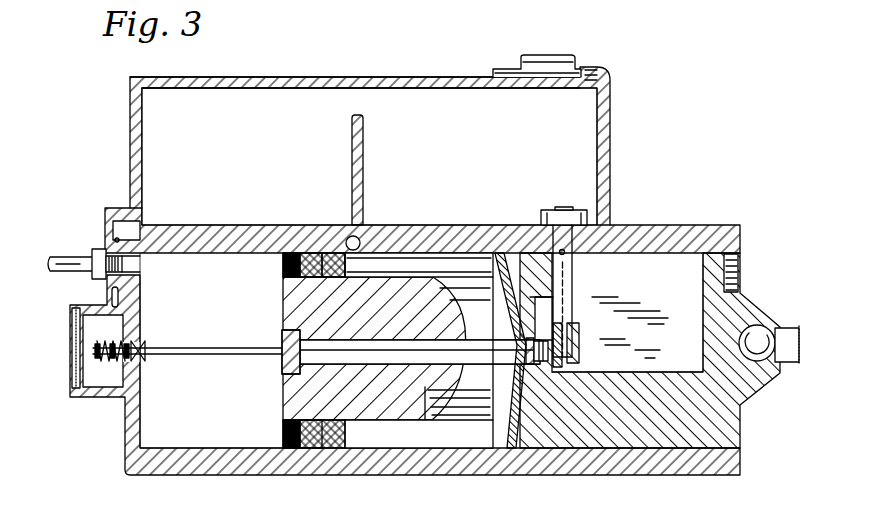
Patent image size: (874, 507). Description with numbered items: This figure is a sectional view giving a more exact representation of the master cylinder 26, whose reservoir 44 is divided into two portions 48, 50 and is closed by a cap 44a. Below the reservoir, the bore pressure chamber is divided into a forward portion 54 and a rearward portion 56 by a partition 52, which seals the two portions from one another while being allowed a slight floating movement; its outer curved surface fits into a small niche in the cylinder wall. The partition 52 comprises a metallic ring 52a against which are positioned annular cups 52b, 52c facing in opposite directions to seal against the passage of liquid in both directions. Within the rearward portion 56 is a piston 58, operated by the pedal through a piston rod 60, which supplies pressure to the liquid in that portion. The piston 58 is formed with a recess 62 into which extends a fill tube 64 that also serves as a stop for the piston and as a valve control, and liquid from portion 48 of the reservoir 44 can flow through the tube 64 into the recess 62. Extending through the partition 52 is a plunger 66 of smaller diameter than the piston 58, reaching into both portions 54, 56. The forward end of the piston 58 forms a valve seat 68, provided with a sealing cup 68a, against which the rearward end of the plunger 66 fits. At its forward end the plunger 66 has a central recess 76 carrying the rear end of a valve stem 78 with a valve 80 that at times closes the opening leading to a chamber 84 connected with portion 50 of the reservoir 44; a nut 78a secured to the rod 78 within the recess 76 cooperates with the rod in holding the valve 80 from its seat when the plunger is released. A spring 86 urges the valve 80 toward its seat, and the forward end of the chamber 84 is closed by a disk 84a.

The master cylinder 26 is at (118, 171).
The reservoir 44 is at (415, 100).
The cap 44a is at (553, 40).
The reservoir portion 48 is at (613, 170).
The reservoir portion 50 is at (163, 188).
The partition 52 is at (280, 276).
The metallic ring 52a is at (322, 250).
The annular cup 52b is at (290, 250).
The annular cup 52c is at (328, 250).
The forward portion 54 is at (150, 437).
The rearward portion 56 is at (397, 442).
The piston 58 is at (698, 440).
The piston rod 60 is at (781, 325).
The recess 62 is at (680, 265).
The fill tube 64 is at (580, 293).
The plunger 66 is at (467, 412).
The valve seat 68 is at (520, 430).
The sealing cup 68a is at (507, 449).
The central recess 76 is at (442, 352).
The valve stem 78 is at (210, 352).
The nut 78a is at (284, 358).
The valve 80 is at (145, 344).
The chamber 84 is at (100, 317).
The disk 84a is at (72, 338).
The spring 86 is at (117, 362).